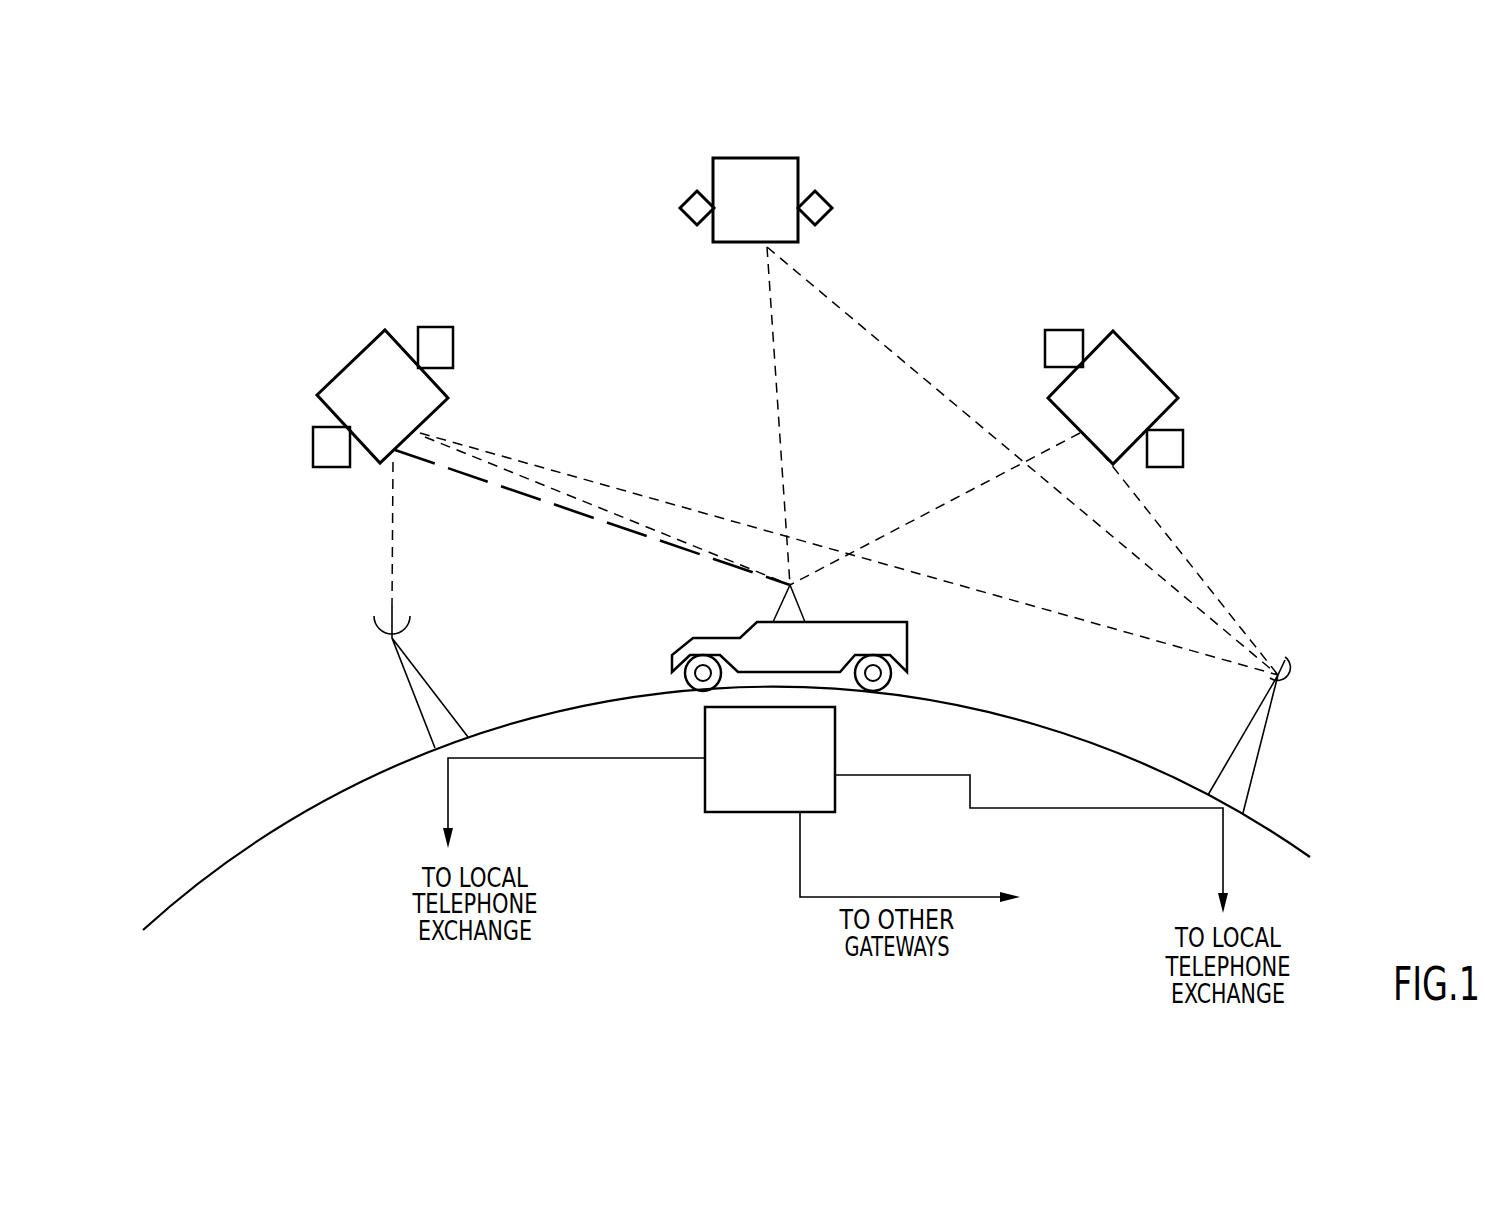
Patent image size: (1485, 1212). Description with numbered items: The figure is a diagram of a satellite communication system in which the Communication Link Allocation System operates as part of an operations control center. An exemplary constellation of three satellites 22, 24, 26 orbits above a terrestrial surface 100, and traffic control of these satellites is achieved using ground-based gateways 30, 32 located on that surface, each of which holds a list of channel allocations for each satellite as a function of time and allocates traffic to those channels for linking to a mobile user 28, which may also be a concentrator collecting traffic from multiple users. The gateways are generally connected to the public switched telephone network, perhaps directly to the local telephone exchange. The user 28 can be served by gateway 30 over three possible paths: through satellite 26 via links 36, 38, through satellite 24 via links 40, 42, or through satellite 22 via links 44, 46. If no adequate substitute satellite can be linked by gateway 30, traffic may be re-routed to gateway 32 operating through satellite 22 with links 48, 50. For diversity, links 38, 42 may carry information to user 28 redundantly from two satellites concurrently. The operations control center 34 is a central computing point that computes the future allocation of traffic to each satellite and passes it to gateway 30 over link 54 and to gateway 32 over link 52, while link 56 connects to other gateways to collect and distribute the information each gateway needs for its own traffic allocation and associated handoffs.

The satellite 22 is at (367, 409).
The satellite 24 is at (739, 216).
The satellite 26 is at (1097, 411).
The mobile user 28 is at (774, 664).
The gateway 30 is at (1240, 742).
The gateway 32 is at (432, 686).
The operations control center 34 is at (754, 794).
The link 36 is at (1170, 502).
The link 38 is at (945, 512).
The link 40 is at (872, 336).
The link 42 is at (780, 411).
The link 44 is at (985, 607).
The link 46 is at (668, 538).
The link 48 is at (393, 532).
The link 50 is at (530, 497).
The link 52 is at (590, 758).
The link 54 is at (880, 775).
The link 56 is at (822, 897).
The terrestrial surface 100 is at (303, 817).